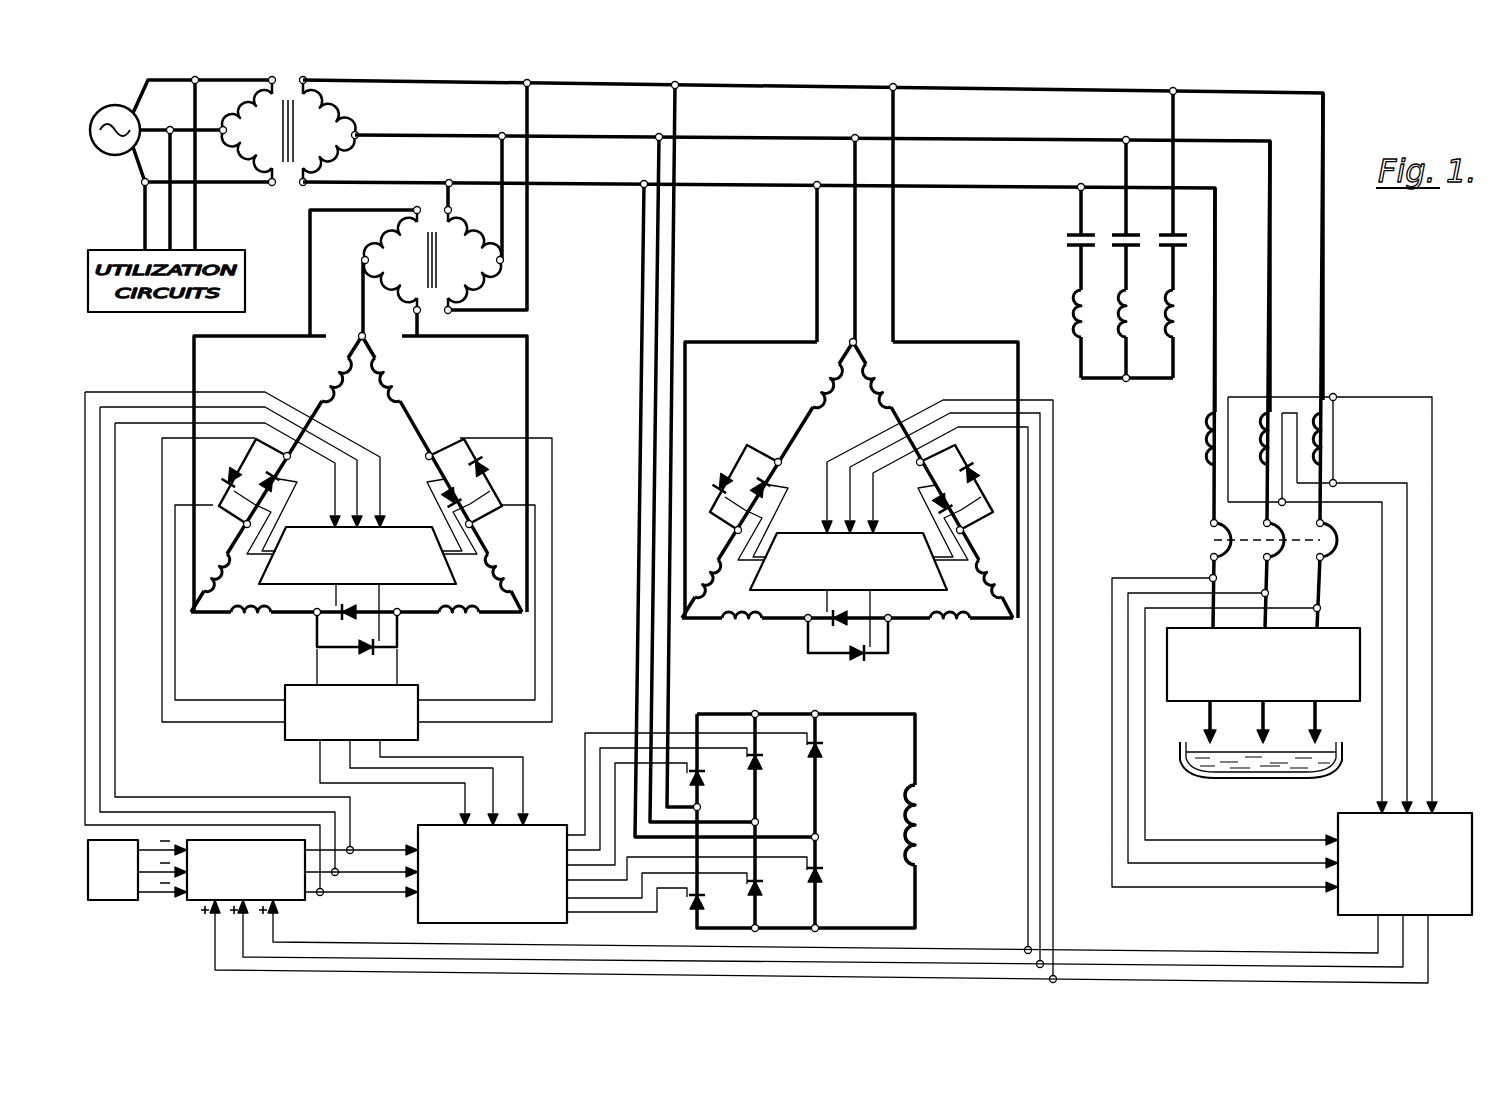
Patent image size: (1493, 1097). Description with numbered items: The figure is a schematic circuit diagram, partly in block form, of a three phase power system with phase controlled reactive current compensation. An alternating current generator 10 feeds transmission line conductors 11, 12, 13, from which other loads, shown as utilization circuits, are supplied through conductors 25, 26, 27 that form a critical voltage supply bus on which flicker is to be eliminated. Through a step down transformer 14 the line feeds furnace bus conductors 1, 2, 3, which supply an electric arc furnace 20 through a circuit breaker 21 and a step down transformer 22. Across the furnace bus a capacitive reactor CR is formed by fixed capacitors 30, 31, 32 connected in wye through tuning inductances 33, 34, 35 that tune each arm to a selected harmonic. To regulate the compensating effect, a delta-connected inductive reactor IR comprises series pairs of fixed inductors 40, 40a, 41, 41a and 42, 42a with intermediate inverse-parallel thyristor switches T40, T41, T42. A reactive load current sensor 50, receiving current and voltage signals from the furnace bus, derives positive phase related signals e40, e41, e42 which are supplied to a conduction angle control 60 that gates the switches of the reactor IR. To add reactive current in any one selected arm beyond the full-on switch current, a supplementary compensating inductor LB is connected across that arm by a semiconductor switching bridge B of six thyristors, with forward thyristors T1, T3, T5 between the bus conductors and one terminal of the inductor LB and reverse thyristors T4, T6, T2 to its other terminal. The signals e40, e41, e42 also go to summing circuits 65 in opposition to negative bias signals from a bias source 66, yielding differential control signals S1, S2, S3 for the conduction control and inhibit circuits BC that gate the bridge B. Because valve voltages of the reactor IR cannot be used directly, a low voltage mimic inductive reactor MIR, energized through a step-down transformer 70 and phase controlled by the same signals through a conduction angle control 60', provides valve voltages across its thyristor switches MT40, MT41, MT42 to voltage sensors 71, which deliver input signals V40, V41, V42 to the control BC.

The bus conductor 1 is at (588, 82).
The bus conductor 2 is at (588, 135).
The bus conductor 3 is at (588, 183).
The alternating current generator 10 is at (112, 107).
The transmission line conductor 11 is at (172, 80).
The transmission line conductor 12 is at (170, 128).
The transmission line conductor 13 is at (214, 180).
The step down transformer 14 is at (287, 94).
The electric arc furnace 20 is at (1238, 780).
The circuit breaker 21 is at (1208, 541).
The step down transformer 22 is at (1342, 627).
The conductor 25 is at (143, 197).
The conductor 26 is at (168, 224).
The conductor 27 is at (197, 224).
The fixed capacitor 30 is at (1088, 234).
The fixed capacitor 31 is at (1132, 234).
The fixed capacitor 32 is at (1178, 234).
The tuning inductance 33 is at (1072, 302).
The tuning inductance 34 is at (1117, 304).
The tuning inductance 35 is at (1164, 304).
The fixed inductor 40 is at (811, 379).
The fixed inductor 41 is at (895, 379).
The fixed inductor 40a is at (707, 560).
The fixed inductor 41a is at (992, 562).
The fixed inductor 42 is at (736, 638).
The fixed inductor 42a is at (965, 638).
The reactive load current sensor 50 is at (1336, 914).
The conduction angle control 60 is at (848, 545).
The conduction angle control 60' is at (357, 541).
The summing circuits 65 is at (242, 838).
The bias source 66 is at (106, 902).
The step-down transformer 70 is at (431, 232).
The voltage sensors 71 is at (410, 684).
The inductive reactor IR is at (850, 516).
The mimic inductive reactor MIR is at (403, 495).
The thyristor switch T40 is at (740, 494).
The thyristor switch T41 is at (960, 496).
The thyristor switch T42 is at (842, 641).
The thyristor switch MT40 is at (258, 457).
The thyristor switch MT41 is at (520, 496).
The thyristor switch MT42 is at (316, 620).
The semiconductor switching bridge B is at (802, 821).
The supplementary compensating inductor LB is at (932, 825).
The conduction control and inhibit circuits BC is at (568, 922).
The capacitive reactor CR is at (1118, 266).
The forward thyristor T1 is at (706, 775).
The reverse thyristor T2 is at (824, 873).
The forward thyristor T3 is at (764, 760).
The reverse thyristor T4 is at (706, 900).
The forward thyristor T5 is at (824, 748).
The reverse thyristor T6 is at (764, 886).
The valve voltage input signal V40 is at (460, 802).
The valve voltage input signal V41 is at (493, 780).
The valve voltage input signal V42 is at (530, 788).
The differential control signal S1 is at (361, 836).
The differential control signal S2 is at (368, 895).
The differential control signal S3 is at (382, 900).
The conduction angle signal e40 is at (827, 492).
The conduction angle signal e41 is at (860, 432).
The conduction angle signal e42 is at (873, 500).